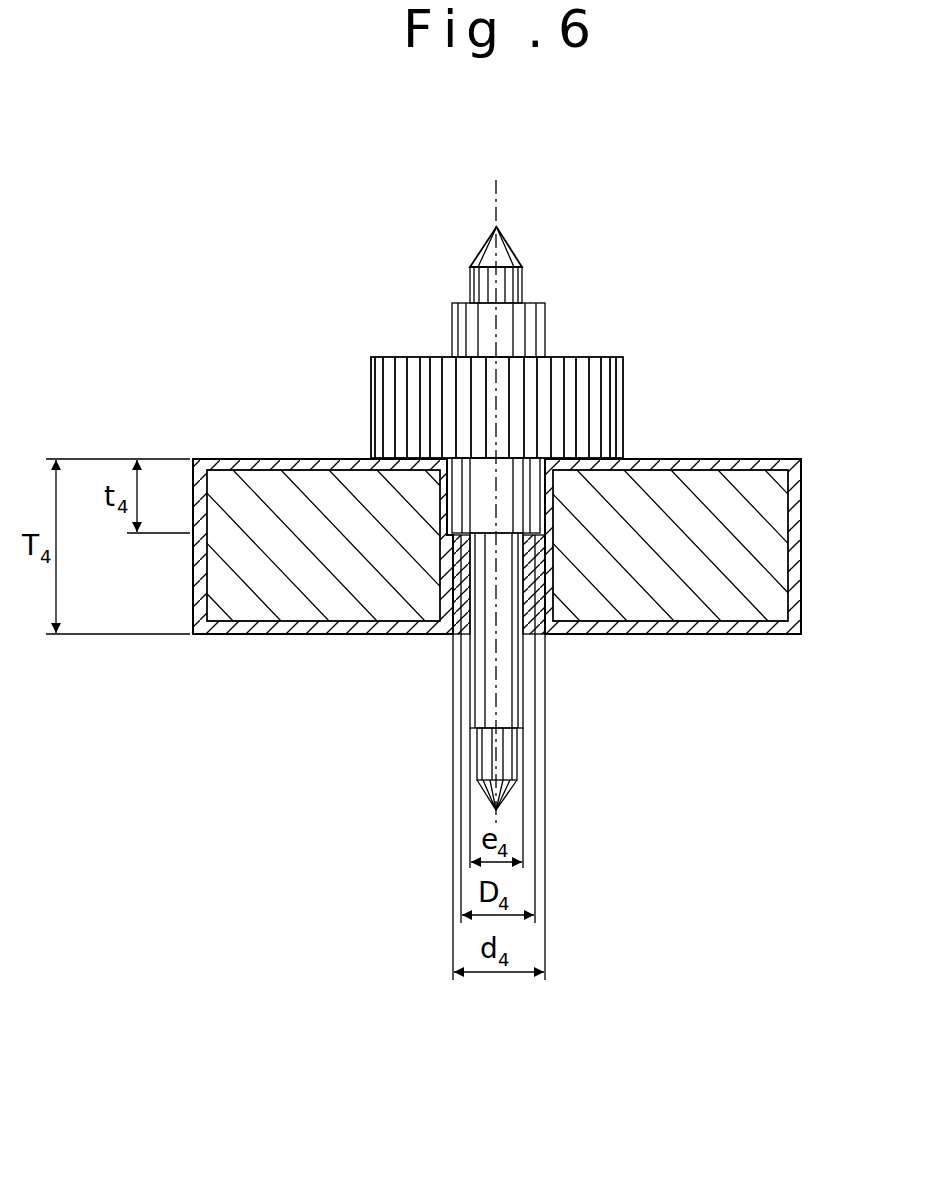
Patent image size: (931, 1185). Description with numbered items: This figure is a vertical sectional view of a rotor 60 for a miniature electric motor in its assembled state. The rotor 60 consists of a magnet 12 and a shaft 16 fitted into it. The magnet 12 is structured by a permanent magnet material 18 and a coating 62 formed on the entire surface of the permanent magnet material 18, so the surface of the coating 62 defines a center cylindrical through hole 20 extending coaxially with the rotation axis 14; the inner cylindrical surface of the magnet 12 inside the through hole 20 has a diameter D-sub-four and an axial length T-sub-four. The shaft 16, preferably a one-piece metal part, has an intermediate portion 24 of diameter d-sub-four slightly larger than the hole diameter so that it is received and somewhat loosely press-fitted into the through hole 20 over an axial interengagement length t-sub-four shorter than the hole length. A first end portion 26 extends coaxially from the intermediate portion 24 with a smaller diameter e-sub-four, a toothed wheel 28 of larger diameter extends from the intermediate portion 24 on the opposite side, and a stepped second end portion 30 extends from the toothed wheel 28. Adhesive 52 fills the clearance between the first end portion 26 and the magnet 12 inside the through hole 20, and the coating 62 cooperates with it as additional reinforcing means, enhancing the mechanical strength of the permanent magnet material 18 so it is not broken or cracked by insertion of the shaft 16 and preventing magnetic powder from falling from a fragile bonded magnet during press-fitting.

The rotor 60 is at (310, 247).
The shaft 16 is at (410, 325).
The rotation axis 14 is at (500, 193).
The stepped second end portion 30 is at (527, 279).
The toothed wheel 28 is at (623, 391).
The intermediate portion 24 is at (527, 513).
The through hole 20 is at (507, 600).
The first end portion 26 is at (512, 708).
The magnet 12 is at (267, 450).
The coating 62 is at (800, 544).
The permanent magnet material 18 is at (222, 598).
The adhesive 52 is at (460, 583).